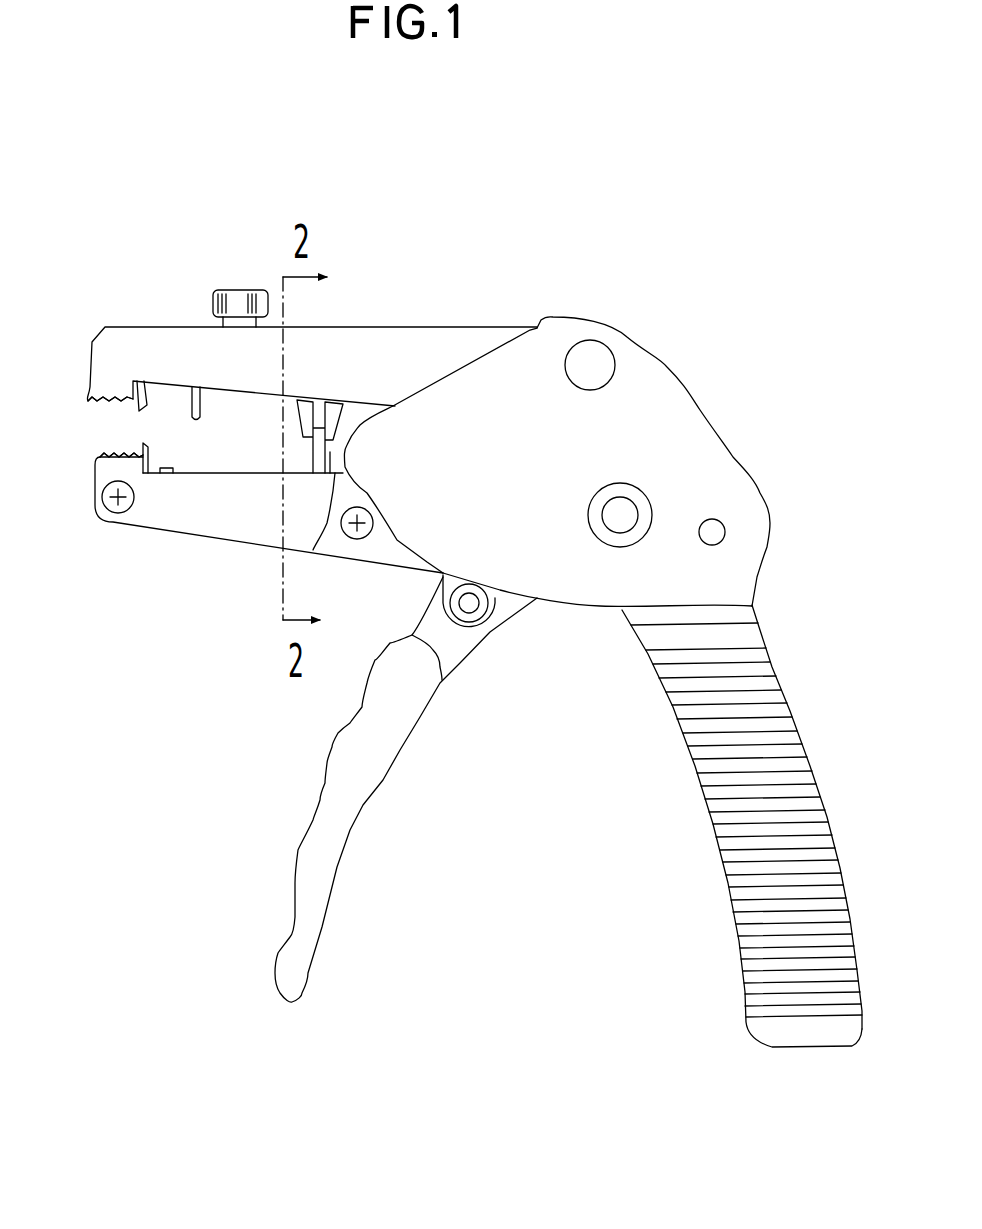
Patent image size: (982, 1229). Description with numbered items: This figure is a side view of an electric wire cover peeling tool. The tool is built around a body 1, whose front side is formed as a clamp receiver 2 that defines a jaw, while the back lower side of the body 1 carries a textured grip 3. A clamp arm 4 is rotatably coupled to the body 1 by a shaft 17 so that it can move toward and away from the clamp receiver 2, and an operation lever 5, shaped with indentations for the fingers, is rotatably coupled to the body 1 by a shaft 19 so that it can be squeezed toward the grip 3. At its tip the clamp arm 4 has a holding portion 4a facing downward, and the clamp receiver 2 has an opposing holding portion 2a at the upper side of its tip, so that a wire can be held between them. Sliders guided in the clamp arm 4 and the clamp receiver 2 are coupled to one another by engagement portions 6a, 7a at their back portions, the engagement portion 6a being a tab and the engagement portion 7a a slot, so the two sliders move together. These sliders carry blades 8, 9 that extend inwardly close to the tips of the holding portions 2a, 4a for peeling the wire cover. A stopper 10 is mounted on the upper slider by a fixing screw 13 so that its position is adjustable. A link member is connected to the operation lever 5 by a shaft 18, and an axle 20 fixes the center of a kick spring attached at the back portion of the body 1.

The body 1 is at (692, 417).
The clamp receiver 2 is at (243, 542).
The holding portion 2a is at (98, 452).
The grip 3 is at (819, 778).
The clamp arm 4 is at (305, 327).
The holding portion 4a is at (92, 398).
The operation lever 5 is at (363, 807).
The engagement portion 6a is at (338, 418).
The engagement portion 7a is at (313, 550).
The blade 8 is at (145, 397).
The blade 9 is at (150, 453).
The stopper 10 is at (203, 400).
The fixing screw 13 is at (243, 288).
The shaft 17 is at (592, 362).
The shaft 18 is at (472, 606).
The shaft 19 is at (620, 525).
The axle 20 is at (725, 530).